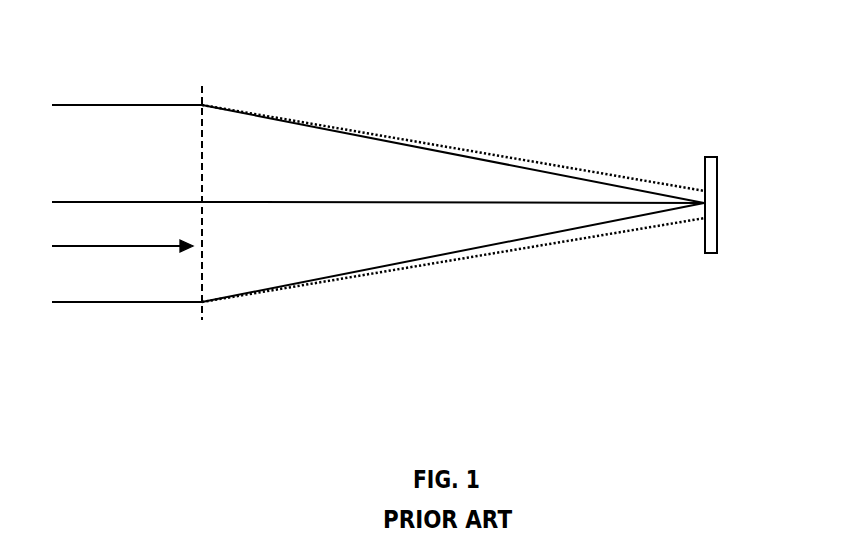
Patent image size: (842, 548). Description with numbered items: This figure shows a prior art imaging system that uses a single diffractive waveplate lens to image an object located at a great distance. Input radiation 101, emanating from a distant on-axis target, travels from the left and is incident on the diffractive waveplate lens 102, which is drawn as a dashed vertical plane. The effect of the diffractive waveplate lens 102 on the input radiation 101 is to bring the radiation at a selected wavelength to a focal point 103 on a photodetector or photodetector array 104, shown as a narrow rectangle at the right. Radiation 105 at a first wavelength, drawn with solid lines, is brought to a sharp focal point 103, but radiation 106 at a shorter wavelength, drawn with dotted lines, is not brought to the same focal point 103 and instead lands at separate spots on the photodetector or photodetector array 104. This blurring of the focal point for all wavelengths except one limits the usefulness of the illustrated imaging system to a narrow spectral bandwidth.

The input radiation 101 is at (153, 290).
The diffractive waveplate lens 102 is at (198, 89).
The focal point 103 is at (702, 190).
The photodetector or photodetector array 104 is at (702, 240).
The radiation at a first wavelength 105 is at (507, 243).
The radiation at a shorter wavelength 106 is at (588, 240).